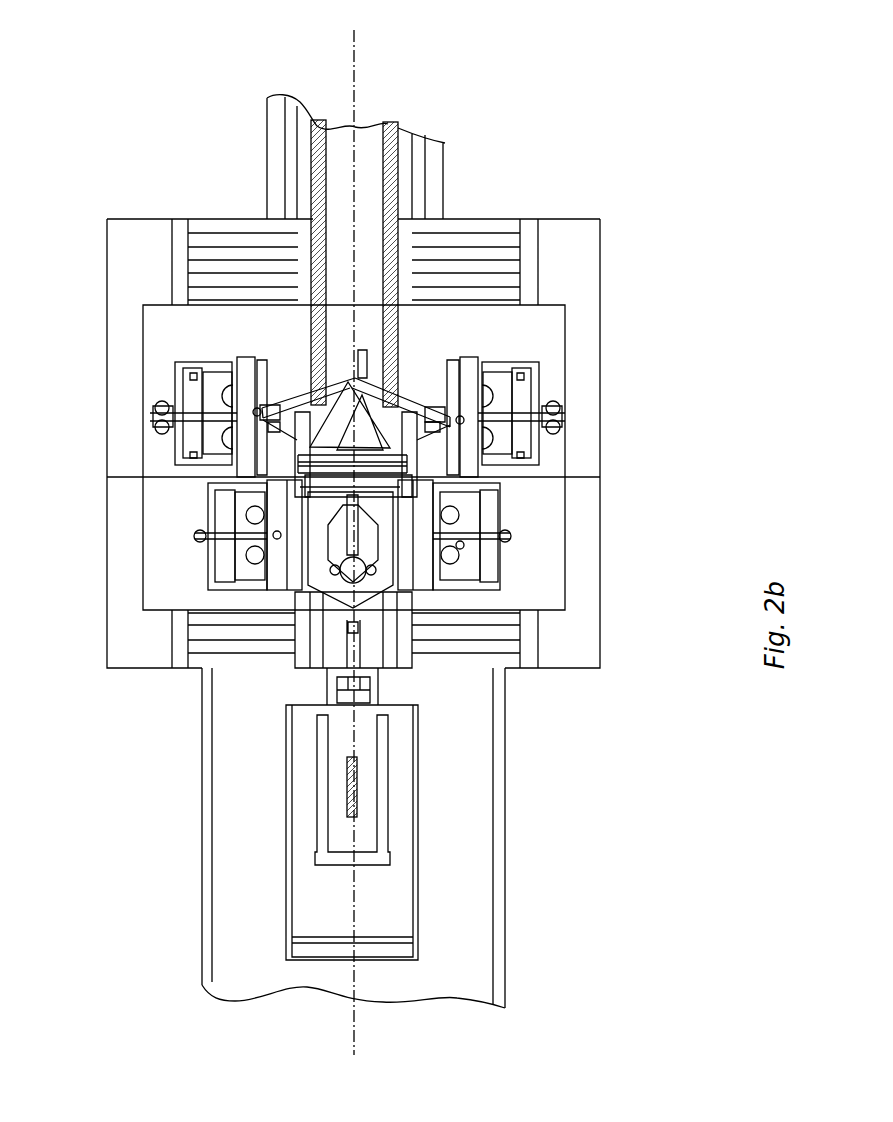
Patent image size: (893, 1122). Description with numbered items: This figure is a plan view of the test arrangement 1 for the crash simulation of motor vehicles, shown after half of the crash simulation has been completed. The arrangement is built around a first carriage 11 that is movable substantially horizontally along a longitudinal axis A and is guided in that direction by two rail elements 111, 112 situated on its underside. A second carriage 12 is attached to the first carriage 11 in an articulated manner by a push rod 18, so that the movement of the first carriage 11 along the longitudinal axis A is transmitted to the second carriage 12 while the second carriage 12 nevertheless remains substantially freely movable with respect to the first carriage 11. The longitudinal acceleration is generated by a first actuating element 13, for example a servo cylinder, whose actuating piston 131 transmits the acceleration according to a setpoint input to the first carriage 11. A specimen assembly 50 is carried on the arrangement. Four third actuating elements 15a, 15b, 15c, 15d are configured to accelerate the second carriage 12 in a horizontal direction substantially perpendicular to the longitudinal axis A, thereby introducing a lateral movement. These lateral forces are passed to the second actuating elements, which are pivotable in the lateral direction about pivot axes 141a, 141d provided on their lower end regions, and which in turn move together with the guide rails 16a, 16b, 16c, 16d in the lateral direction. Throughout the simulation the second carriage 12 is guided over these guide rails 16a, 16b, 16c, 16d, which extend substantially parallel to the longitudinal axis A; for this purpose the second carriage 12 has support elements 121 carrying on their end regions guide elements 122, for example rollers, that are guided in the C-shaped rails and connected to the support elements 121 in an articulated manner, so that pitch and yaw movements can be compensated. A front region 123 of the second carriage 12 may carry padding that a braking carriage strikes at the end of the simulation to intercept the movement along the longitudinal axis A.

The test arrangement 1 is at (85, 54).
The longitudinal axis A is at (356, 88).
The first carriage 11 is at (327, 610).
The second carriage 12 is at (403, 497).
The first actuating element 13 is at (345, 750).
The push rod 18 is at (353, 547).
The specimen assembly 50 is at (105, 477).
The rail element 111 is at (318, 115).
The rail element 112 is at (389, 156).
The support element 121 is at (278, 405).
The guide element 122 is at (257, 412).
The front region 123 is at (365, 350).
The actuating piston 131 is at (357, 637).
The pivot axis 141a is at (450, 405).
The pivot axis 141d is at (262, 362).
The third actuating element 15a is at (498, 533).
The third actuating element 15b is at (525, 417).
The third actuating element 15c is at (212, 530).
The third actuating element 15d is at (158, 412).
The guide rail 16a is at (453, 570).
The guide rail 16b is at (470, 402).
The guide rail 16c is at (275, 560).
The guide rail 16d is at (243, 388).